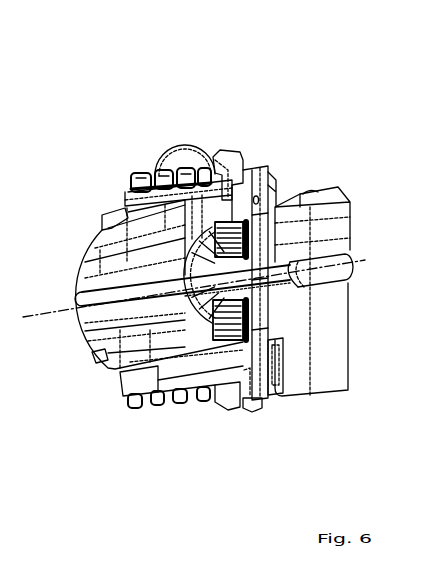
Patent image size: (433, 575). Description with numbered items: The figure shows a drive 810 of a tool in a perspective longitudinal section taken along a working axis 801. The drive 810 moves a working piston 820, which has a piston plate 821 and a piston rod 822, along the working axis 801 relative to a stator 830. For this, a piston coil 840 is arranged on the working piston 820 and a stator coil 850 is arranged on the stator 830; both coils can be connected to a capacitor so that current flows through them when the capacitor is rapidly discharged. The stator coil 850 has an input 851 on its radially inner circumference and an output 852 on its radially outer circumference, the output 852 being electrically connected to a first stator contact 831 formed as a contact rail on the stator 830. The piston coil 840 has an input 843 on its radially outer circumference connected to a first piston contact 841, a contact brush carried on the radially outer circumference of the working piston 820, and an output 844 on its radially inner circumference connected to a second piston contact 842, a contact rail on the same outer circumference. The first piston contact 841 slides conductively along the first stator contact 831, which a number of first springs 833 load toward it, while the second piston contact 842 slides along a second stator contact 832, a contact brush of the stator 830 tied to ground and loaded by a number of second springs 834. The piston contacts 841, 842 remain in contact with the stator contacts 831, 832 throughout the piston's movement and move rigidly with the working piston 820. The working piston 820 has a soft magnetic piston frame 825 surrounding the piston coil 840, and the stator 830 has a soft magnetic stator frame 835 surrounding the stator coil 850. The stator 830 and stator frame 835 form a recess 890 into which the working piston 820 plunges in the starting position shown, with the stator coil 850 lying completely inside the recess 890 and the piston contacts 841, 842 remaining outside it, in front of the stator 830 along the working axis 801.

The drive 810 is at (53, 80).
The working piston 820 is at (193, 84).
The second springs 834 is at (165, 165).
The piston rod 822 is at (186, 187).
The piston plate 821 is at (224, 183).
The second stator contact 832 is at (240, 178).
The second piston contact 842 is at (263, 190).
The recess 890 is at (270, 185).
The stator coil 850 is at (277, 204).
The piston frame 825 is at (283, 237).
The stator frame 835 is at (322, 262).
The input 851 is at (230, 297).
The output 852 is at (250, 345).
The stator 830 is at (272, 368).
The input 843 is at (248, 382).
The piston coil 840 is at (237, 395).
The first piston contact 841 is at (210, 410).
The first stator contact 831 is at (187, 400).
The first springs 833 is at (162, 400).
The output 844 is at (250, 235).
The working axis 801 is at (46, 311).